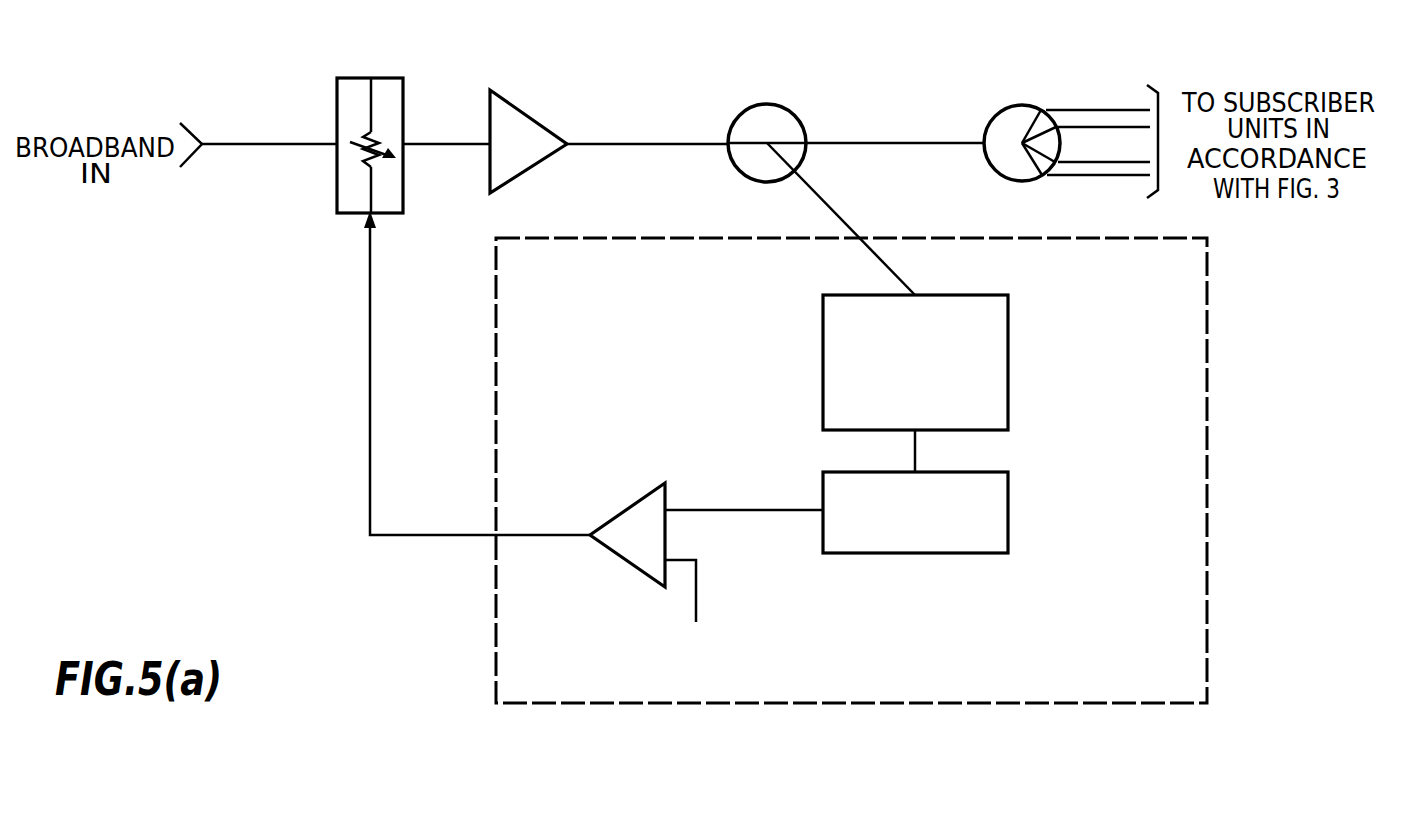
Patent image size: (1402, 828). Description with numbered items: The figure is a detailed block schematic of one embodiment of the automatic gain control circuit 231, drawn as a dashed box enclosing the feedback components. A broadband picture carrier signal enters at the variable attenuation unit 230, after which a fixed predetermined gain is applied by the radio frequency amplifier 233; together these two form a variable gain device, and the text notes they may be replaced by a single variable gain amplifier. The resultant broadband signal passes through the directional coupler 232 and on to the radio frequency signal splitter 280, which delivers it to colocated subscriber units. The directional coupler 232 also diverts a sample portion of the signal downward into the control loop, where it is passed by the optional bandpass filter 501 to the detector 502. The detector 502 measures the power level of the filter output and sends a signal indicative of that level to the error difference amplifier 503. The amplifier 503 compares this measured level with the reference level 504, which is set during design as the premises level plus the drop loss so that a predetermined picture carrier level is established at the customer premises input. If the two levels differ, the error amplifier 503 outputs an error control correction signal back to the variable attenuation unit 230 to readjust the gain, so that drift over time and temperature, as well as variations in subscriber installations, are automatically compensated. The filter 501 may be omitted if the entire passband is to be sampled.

The variable attenuation unit 230 is at (350, 78).
The radio frequency amplifier 233 is at (525, 115).
The directional coupler 232 is at (765, 105).
The radio frequency signal splitter 280 is at (1018, 104).
The automatic gain control circuit 231 is at (1207, 457).
The filter 501 is at (975, 294).
The detector 502 is at (975, 471).
The error difference amplifier 503 is at (638, 492).
The reference level 504 is at (697, 584).